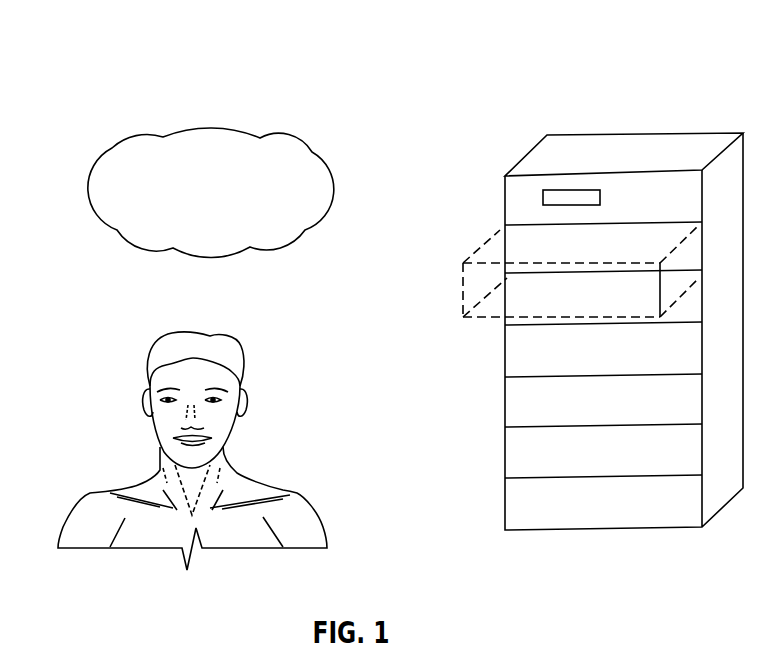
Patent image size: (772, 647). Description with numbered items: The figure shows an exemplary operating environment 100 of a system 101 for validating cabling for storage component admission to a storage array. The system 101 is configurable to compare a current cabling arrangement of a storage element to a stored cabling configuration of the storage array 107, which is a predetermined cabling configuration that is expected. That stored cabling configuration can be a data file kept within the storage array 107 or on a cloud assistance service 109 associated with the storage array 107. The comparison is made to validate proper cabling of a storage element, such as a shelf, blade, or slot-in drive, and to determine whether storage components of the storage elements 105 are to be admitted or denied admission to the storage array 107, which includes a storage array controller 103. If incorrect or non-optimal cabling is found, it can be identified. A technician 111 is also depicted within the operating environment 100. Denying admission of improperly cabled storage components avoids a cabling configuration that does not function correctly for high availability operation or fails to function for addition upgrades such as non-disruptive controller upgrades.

The operating environment 100 is at (101, 42).
The system 101 is at (555, 197).
The storage array controller 103 is at (634, 210).
The storage elements 105 is at (511, 271).
The storage array 107 is at (609, 132).
The cloud assistance service 109 is at (213, 126).
The technician 111 is at (188, 330).